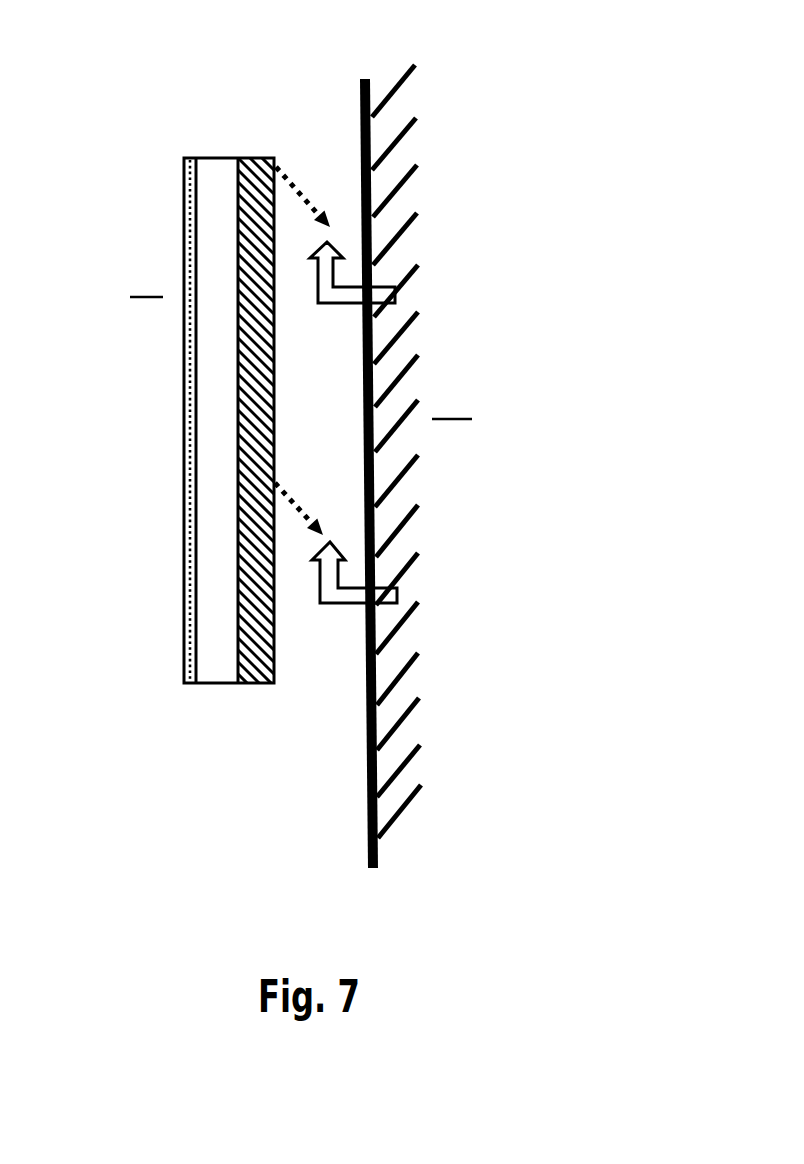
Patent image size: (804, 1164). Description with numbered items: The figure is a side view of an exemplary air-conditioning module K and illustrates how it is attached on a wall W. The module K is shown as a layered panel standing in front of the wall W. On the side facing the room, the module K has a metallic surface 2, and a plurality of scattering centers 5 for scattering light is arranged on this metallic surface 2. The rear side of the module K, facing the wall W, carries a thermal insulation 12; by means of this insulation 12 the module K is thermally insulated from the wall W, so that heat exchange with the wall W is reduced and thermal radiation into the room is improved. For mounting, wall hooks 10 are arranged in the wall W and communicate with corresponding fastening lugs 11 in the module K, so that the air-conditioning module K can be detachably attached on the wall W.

The metallic surface 2 is at (184, 357).
The scattering centers 5 is at (188, 493).
The thermal insulation 12 is at (247, 163).
The wall hooks 10 is at (338, 296).
The fastening lugs 11 is at (278, 165).
The air-conditioning module K is at (146, 277).
The wall W is at (420, 466).